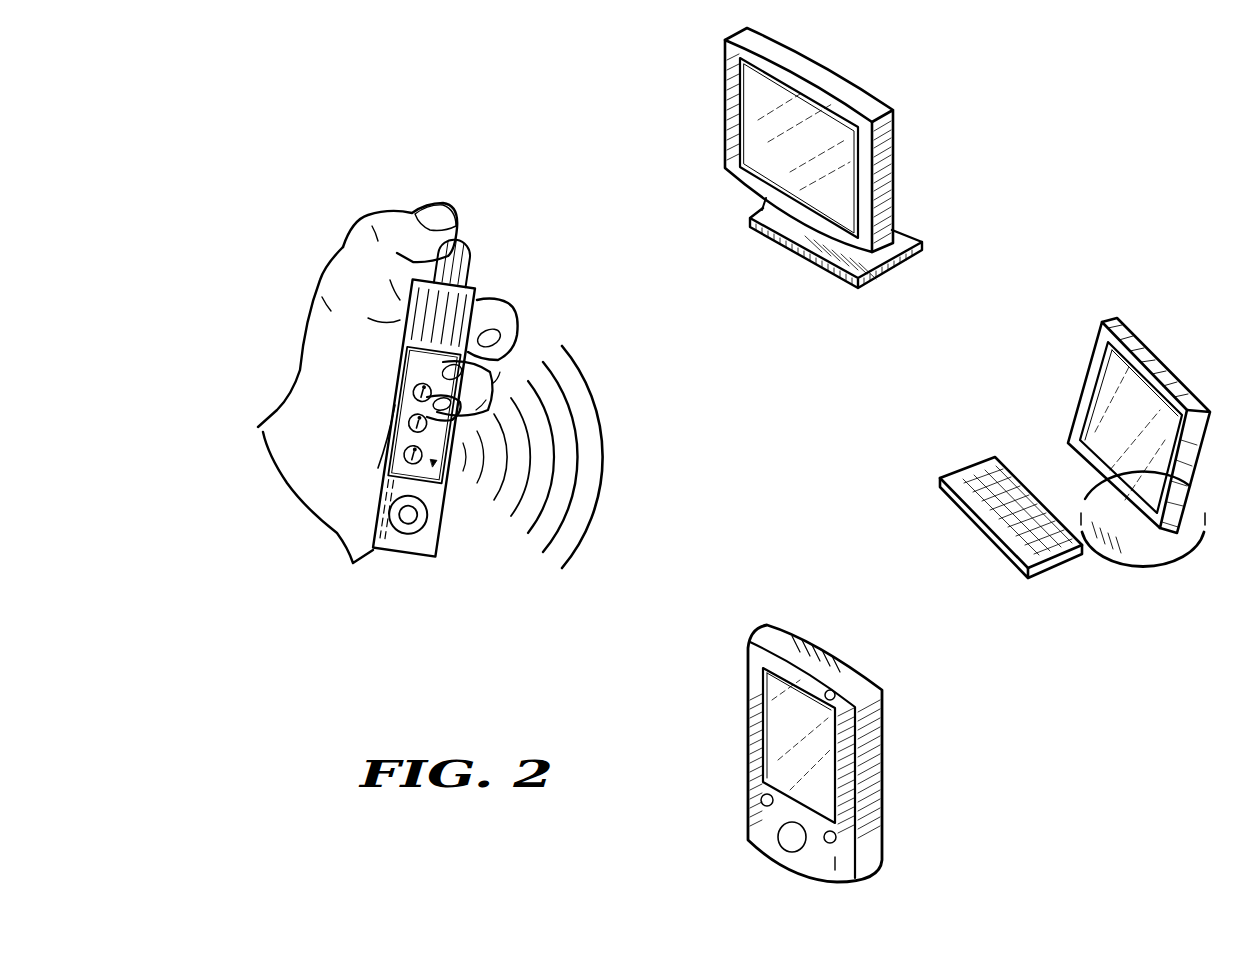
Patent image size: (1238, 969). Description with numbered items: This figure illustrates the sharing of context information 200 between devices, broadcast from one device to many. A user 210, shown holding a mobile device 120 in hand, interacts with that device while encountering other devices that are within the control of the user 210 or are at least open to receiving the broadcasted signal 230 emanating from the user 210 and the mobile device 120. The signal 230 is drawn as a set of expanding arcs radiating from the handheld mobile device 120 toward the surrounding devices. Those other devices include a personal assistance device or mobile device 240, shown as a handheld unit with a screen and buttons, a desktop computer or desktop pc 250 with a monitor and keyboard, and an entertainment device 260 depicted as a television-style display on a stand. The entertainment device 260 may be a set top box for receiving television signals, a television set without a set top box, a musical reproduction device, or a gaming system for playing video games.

The context information 200 is at (780, 483).
The mobile device 120 is at (473, 258).
The user 210 is at (350, 285).
The broadcasted signal 230 is at (610, 447).
The personal assistance device or mobile device 240 is at (883, 715).
The desktop computer 250 is at (1083, 382).
The entertainment device 260 is at (895, 158).